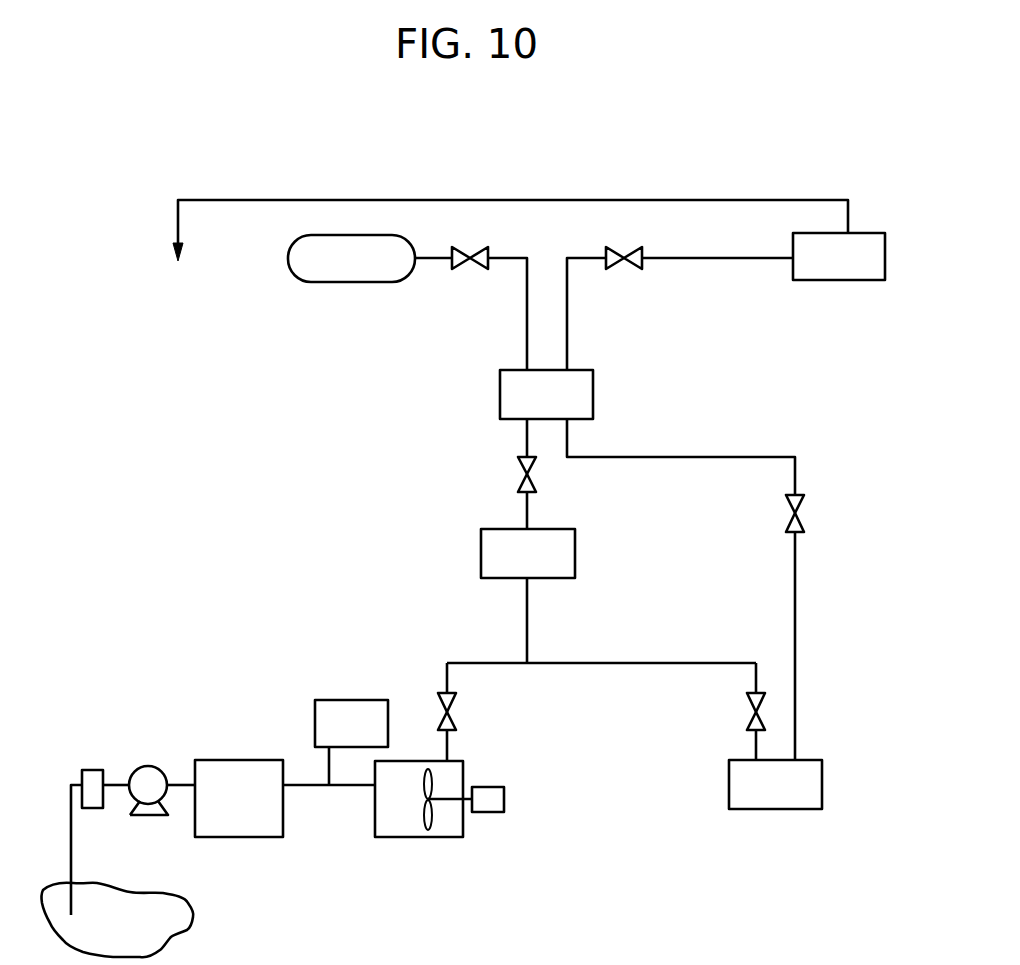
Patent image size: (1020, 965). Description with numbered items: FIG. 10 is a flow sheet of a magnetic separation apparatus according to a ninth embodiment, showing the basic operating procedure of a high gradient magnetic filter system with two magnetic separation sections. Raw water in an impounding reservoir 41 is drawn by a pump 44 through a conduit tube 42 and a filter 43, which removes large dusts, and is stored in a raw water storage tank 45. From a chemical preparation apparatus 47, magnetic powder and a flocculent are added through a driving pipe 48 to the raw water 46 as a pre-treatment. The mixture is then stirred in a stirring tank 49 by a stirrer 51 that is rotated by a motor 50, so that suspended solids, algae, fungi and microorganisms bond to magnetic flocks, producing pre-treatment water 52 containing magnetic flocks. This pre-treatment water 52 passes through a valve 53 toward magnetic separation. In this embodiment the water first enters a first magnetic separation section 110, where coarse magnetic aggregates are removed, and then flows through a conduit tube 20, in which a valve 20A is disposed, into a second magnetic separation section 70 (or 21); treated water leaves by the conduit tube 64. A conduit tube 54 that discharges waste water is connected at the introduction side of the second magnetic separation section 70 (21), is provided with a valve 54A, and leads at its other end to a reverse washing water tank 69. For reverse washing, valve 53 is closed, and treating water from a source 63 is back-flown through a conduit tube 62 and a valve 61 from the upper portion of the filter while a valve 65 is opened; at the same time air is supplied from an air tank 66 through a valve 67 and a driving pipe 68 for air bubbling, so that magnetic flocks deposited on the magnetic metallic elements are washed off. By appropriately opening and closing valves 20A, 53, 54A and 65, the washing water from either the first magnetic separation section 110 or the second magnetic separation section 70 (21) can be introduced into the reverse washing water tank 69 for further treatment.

The conduit tube 64 is at (404, 200).
The air tank 66 is at (290, 252).
The valve 67 is at (484, 252).
The driving pipe 68 is at (527, 318).
The valve 61 is at (636, 252).
The conduit tube 62 is at (738, 259).
The treating water source 63 is at (852, 281).
The second magnetic separation section 70 is at (619, 391).
The second magnetic separation section 21 is at (594, 386).
The conduit tube 20 is at (526, 438).
The valve 20A is at (518, 477).
The conduit tube 54 is at (675, 458).
The valve 54A is at (805, 518).
The first magnetic separation section 110 is at (576, 554).
The valve 53 is at (457, 717).
The valve 65 is at (748, 716).
The reverse washing water tank 69 is at (785, 810).
The stirring tank 49 is at (449, 826).
The pre-treatment water 52 is at (445, 828).
The stirrer 51 is at (436, 773).
The motor 50 is at (505, 800).
The chemical preparation apparatus 47 is at (343, 700).
The driving pipe 48 is at (329, 760).
The raw water 46 is at (244, 806).
The raw water storage tank 45 is at (250, 838).
The pump 44 is at (140, 768).
The filter 43 is at (93, 770).
The conduit tube 42 is at (71, 852).
The impounding reservoir 41 is at (193, 917).